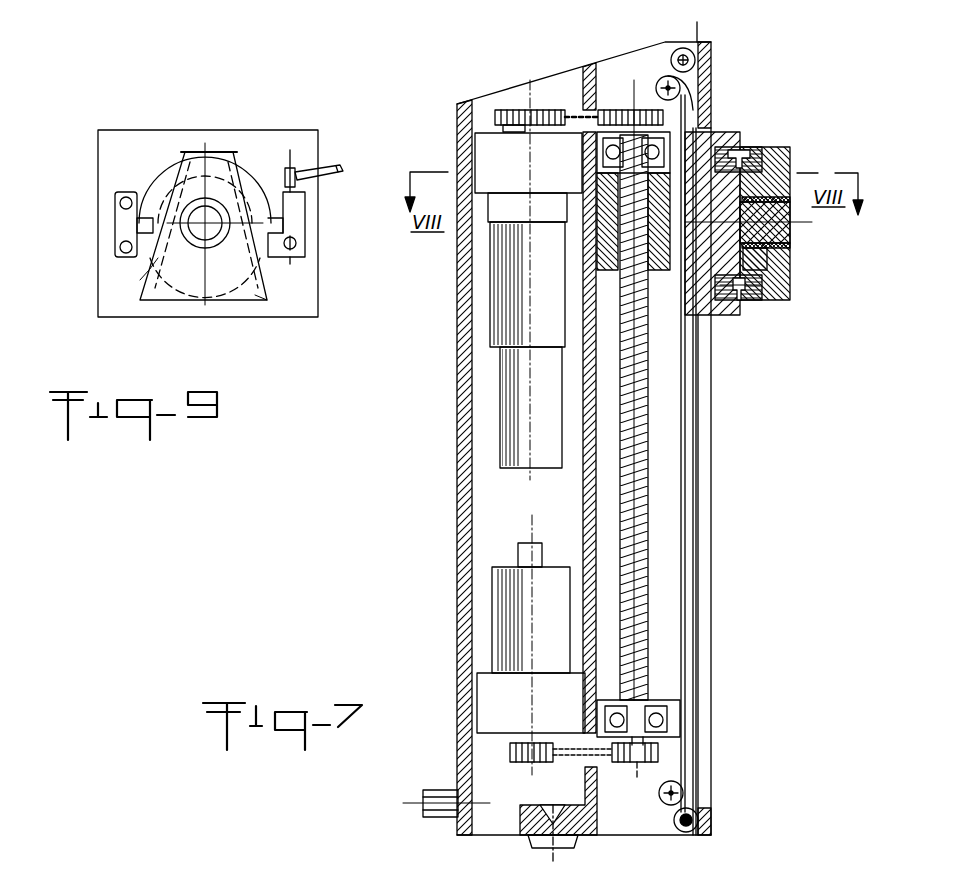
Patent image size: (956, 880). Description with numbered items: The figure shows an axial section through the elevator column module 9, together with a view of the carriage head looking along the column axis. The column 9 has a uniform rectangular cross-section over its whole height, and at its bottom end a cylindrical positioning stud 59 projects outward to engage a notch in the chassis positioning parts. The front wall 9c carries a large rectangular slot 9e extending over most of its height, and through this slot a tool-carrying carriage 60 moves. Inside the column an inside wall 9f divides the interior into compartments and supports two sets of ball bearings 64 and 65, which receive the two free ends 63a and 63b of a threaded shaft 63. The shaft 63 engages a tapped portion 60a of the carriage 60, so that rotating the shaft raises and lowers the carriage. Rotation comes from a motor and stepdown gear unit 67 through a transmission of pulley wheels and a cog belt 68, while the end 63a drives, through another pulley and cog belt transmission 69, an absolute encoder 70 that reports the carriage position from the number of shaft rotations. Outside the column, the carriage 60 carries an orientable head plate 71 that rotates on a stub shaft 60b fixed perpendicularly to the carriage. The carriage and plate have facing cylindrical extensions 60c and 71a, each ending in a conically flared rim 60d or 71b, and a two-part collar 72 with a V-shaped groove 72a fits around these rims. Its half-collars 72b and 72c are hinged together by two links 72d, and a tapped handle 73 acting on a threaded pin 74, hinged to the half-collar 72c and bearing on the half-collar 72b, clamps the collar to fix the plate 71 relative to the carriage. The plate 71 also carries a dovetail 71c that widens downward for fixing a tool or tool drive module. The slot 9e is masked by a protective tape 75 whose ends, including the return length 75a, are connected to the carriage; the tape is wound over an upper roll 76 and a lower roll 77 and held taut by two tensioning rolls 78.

In FIG. 7, the elevator column module 9 is at (466, 453).
In FIG. 7, the front wall 9c is at (712, 812).
In FIG. 7, the slot 9e is at (458, 578).
In FIG. 7, the inside wall 9f is at (583, 470).
In FIG. 7, the positioning stud 59 is at (423, 795).
In FIG. 7, the tool-carrying carriage 60 is at (722, 131).
In FIG. 7, the tapped portion 60a is at (605, 265).
In FIG. 7, the stub shaft 60b is at (790, 230).
In FIG. 7, the cylindrical extension 60c is at (742, 147).
In FIG. 7, the conically flared peripheral rim 60d is at (760, 147).
In FIG. 7, the threaded shaft 63 is at (635, 444).
In FIG. 7, the shaft end 63a is at (642, 737).
In FIG. 7, the shaft end 63b is at (632, 110).
In FIG. 7, the ball bearings 64 is at (680, 707).
In FIG. 7, the ball bearings 65 is at (592, 158).
In FIG. 7, the motor and stepdown gear unit 67 is at (518, 318).
In FIG. 7, the pulley wheels and cog belt 68 is at (560, 108).
In FIG. 7, the pulley and cog belt transmission 69 is at (568, 762).
In FIG. 7, the absolute encoder 70 is at (520, 640).
In FIG. 7, the orientable head plate 71 is at (790, 148).
In FIG. 9, the orientable head plate 71 is at (250, 317).
In FIG. 7, the cylindrical extension 71a is at (757, 263).
In FIG. 7, the conically flared peripheral rim 71b is at (762, 298).
In FIG. 9, the dovetail 71c is at (266, 300).
In FIG. 7, the collar 72 is at (758, 305).
In FIG. 9, the collar 72 is at (135, 185).
In FIG. 7, the V-shaped groove 72a is at (737, 305).
In FIG. 9, the half-collar 72b is at (248, 142).
In FIG. 9, the half-collar 72c is at (138, 265).
In FIG. 9, the links 72d is at (115, 228).
In FIG. 9, the tapped handle 73 is at (330, 166).
In FIG. 9, the pin 74 is at (305, 226).
In FIG. 7, the protective tape 75 is at (700, 130).
In FIG. 7, the tape end 75a is at (682, 453).
In FIG. 7, the roll 76 is at (712, 21).
In FIG. 7, the roll 77 is at (688, 832).
In FIG. 7, the tensioning rolls 78 is at (664, 78).